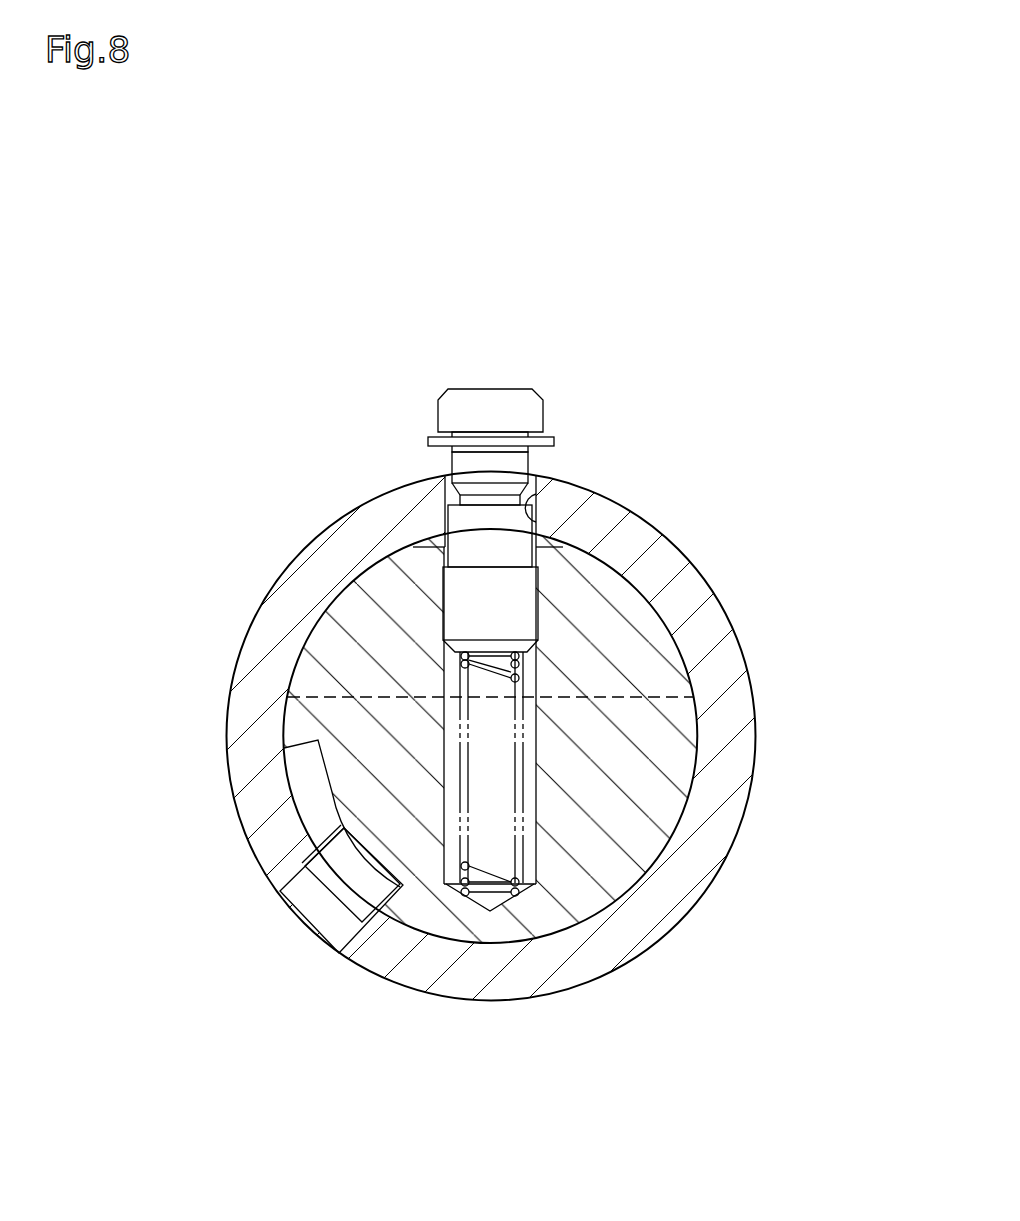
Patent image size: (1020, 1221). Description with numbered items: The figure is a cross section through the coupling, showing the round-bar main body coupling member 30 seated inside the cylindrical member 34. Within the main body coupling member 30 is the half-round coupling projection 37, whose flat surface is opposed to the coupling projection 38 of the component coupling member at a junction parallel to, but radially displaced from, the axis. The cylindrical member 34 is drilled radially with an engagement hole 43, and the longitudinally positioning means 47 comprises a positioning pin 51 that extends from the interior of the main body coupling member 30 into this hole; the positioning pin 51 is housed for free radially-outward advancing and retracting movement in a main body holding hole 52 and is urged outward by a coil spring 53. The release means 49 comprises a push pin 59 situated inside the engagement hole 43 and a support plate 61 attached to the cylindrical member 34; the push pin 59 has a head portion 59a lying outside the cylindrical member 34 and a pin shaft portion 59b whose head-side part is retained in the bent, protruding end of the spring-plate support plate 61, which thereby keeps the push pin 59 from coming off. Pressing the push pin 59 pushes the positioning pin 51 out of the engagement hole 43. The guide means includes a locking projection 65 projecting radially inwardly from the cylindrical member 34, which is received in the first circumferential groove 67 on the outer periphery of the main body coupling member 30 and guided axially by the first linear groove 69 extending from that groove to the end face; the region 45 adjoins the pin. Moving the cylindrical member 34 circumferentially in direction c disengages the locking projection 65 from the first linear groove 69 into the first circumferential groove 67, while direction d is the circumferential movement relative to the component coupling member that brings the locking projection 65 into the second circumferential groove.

The main body coupling member 30 is at (488, 735).
The cylindrical member 34 is at (665, 942).
The coupling projection 37 is at (380, 757).
The coupling projection 38 is at (370, 628).
The engagement hole 43 is at (536, 494).
The recess 45 is at (440, 589).
The longitudinally positioning means 47 is at (548, 618).
The release means 49 is at (556, 627).
The positioning pin 51 is at (520, 590).
The main body holding hole 52 is at (536, 733).
The coil spring 53 is at (520, 662).
The push pin 59 is at (497, 440).
The head portion 59a is at (455, 417).
The pin shaft portion 59b is at (465, 470).
The support plate 61 is at (549, 441).
The locking projection 65 is at (337, 847).
The first circumferential groove 67 is at (377, 908).
The first linear groove 69 is at (317, 757).
The direction c is at (387, 352).
The direction d is at (383, 305).